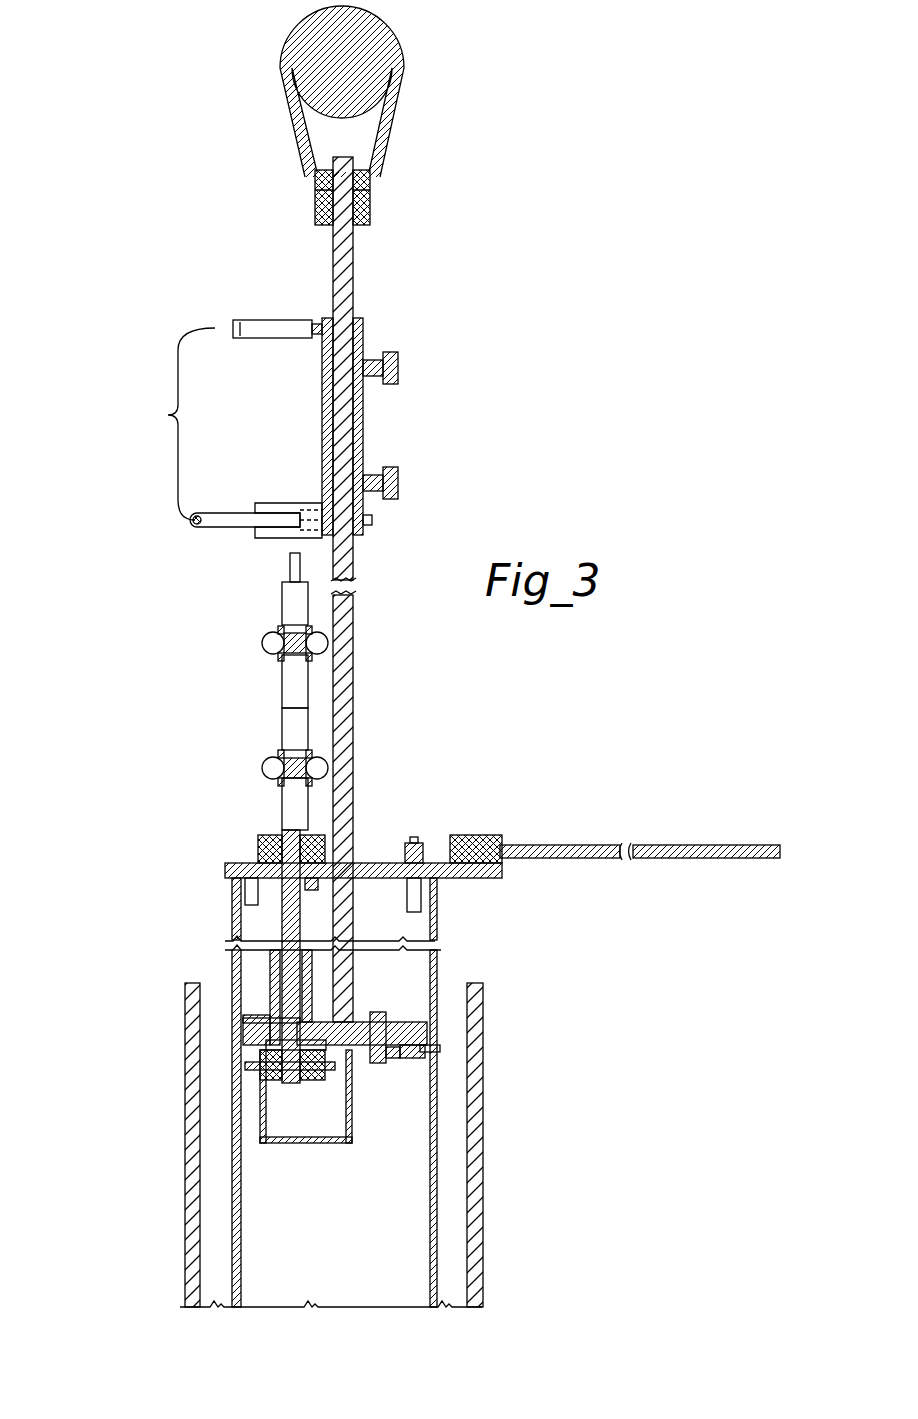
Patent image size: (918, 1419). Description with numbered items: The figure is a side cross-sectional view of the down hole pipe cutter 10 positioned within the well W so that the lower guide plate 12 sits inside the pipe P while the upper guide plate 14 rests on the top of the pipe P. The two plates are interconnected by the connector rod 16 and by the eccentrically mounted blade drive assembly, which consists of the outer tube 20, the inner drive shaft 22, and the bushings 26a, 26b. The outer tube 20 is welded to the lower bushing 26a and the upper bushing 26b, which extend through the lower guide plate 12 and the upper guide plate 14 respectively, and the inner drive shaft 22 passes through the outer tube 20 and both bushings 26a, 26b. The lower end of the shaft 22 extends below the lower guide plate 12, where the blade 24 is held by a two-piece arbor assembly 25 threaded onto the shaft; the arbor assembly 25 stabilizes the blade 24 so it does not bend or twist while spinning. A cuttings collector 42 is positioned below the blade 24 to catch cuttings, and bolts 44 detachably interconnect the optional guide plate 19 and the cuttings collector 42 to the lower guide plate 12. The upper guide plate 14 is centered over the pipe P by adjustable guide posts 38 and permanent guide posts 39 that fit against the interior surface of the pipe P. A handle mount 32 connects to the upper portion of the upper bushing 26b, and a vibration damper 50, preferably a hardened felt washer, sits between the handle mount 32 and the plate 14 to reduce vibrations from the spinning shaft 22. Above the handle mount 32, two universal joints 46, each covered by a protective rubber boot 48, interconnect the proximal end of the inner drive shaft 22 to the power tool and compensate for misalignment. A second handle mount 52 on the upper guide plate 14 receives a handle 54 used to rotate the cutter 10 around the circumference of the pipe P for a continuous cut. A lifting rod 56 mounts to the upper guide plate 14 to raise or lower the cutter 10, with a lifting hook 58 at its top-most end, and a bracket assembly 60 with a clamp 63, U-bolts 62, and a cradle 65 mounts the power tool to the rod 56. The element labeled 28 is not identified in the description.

The down hole pipe cutter 10 is at (193, 298).
The lower guide plate 12 is at (260, 1052).
The upper guide plate 14 is at (228, 870).
The connector rod 16 is at (345, 955).
The optional guide plate 19 is at (245, 1072).
The outer tube 20 is at (270, 992).
The inner drive shaft 22 is at (282, 1000).
The blade 24 is at (262, 1052).
The arbor assembly 25 is at (337, 1058).
The lower bushing 26a is at (262, 1030).
The upper bushing 26b is at (233, 940).
The nut 28 is at (270, 1022).
The handle mount 32 is at (283, 843).
The adjustable guide posts 38 is at (414, 840).
The permanent guide posts 39 is at (235, 905).
The cuttings collector 42 is at (298, 1143).
The bolts 44 is at (372, 1013).
The universal joints 46 is at (254, 725).
The protective rubber boot 48 is at (262, 643).
The vibration damper 50 is at (258, 850).
The second handle mount 52 is at (490, 835).
The handle 54 is at (663, 845).
The lifting rod 56 is at (355, 690).
The lifting hook 58 is at (402, 90).
The bracket assembly 60 is at (166, 424).
The U-bolts 62 is at (235, 512).
The clamp 63 is at (365, 447).
The cradle 65 is at (270, 320).
The pipe P is at (440, 920).
The well W is at (497, 1160).